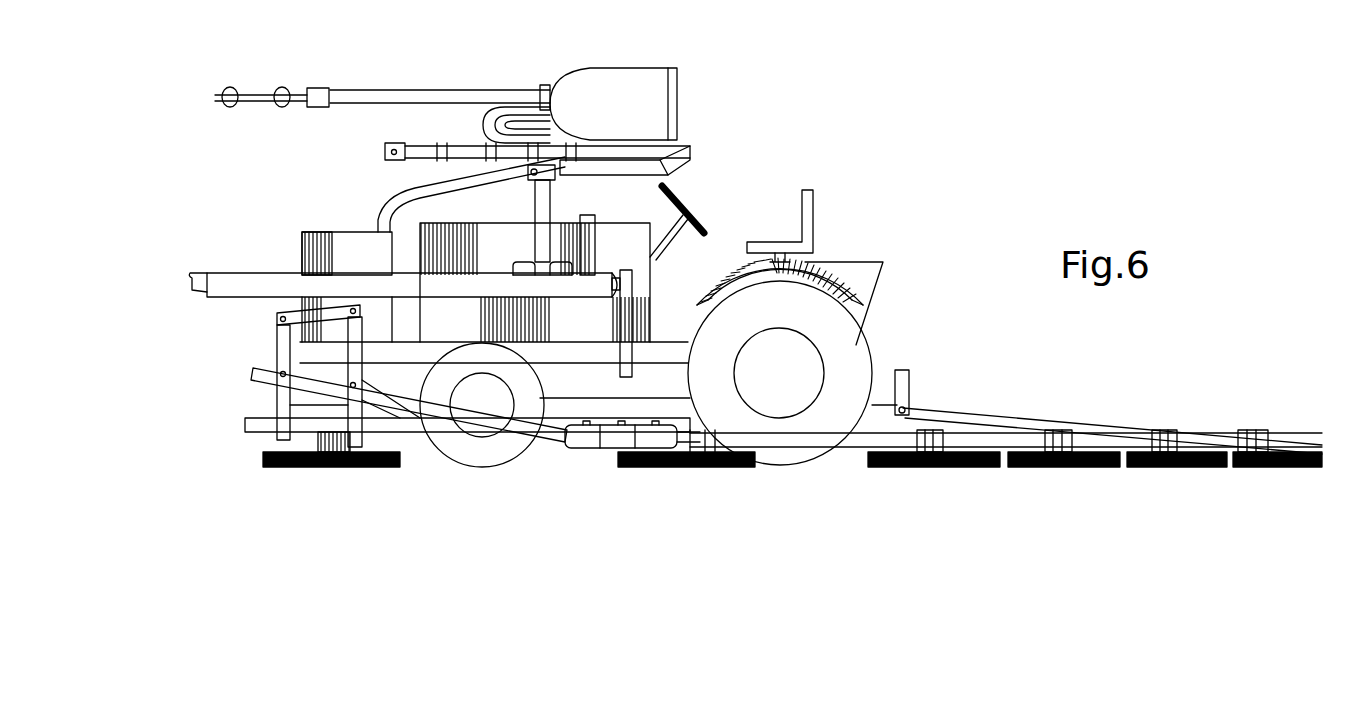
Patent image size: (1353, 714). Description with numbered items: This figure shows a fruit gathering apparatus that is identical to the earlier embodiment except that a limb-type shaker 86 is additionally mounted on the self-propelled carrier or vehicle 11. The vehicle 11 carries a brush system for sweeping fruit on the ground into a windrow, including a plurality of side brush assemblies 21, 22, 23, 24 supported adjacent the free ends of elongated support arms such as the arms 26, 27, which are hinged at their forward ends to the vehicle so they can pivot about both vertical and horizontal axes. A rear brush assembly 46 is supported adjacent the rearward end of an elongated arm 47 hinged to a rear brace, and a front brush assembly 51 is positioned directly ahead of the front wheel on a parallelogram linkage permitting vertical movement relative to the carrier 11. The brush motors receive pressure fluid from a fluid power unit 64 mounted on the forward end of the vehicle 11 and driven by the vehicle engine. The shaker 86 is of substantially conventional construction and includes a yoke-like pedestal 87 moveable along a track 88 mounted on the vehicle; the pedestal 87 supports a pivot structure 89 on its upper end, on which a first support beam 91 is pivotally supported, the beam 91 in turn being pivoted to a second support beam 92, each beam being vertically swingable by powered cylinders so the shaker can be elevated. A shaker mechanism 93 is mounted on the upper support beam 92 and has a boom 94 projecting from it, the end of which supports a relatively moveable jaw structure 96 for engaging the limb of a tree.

The self-propelled carrier or vehicle 11 is at (860, 265).
The side brush assembly 21 is at (724, 468).
The side brush assembly 22 is at (972, 468).
The side brush assembly 23 is at (1082, 468).
The side brush assembly 24 is at (1192, 468).
The elongated support arm 26 is at (552, 445).
The elongated support arm 27 is at (855, 447).
The rear brush assembly 46 is at (1302, 468).
The elongated arm 47 is at (978, 420).
The front brush assembly 51 is at (374, 465).
The fluid power unit 64 is at (322, 232).
The limb-type shaker 86 is at (452, 117).
The yoke-like pedestal 87 is at (540, 250).
The track 88 is at (450, 275).
The pivot structure 89 is at (531, 175).
The first support beam 91 is at (620, 165).
The second support beam 92 is at (418, 146).
The shaker mechanism 93 is at (640, 85).
The boom 94 is at (402, 90).
The moveable jaw structure 96 is at (258, 95).